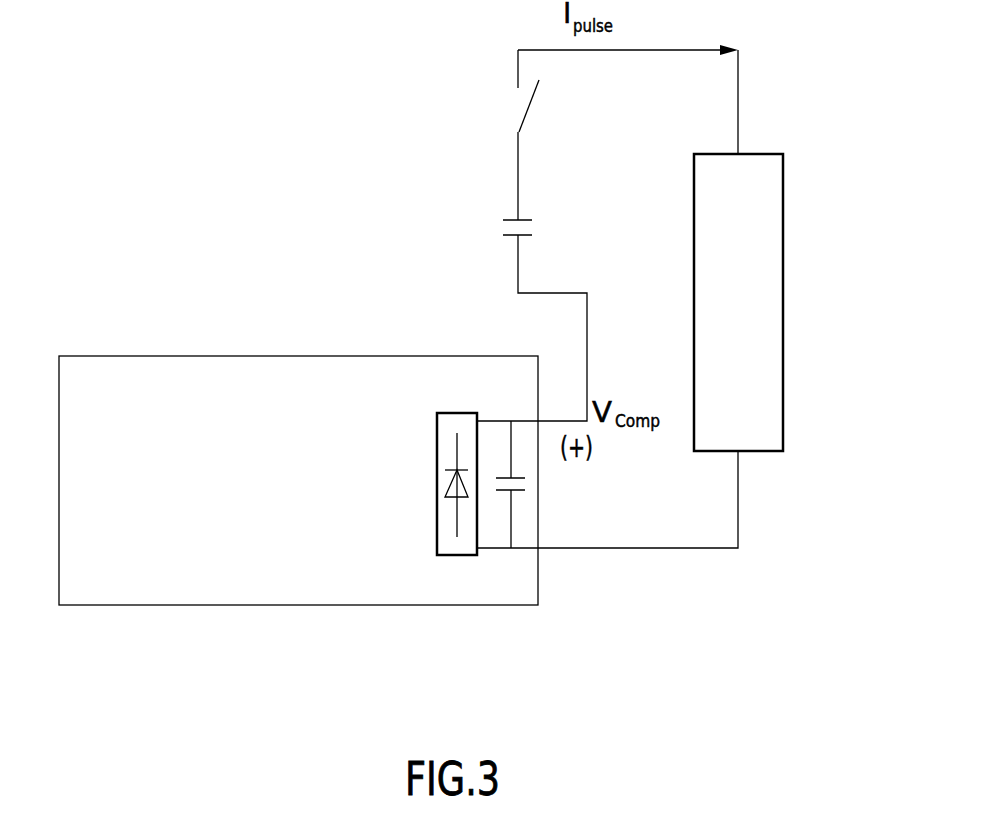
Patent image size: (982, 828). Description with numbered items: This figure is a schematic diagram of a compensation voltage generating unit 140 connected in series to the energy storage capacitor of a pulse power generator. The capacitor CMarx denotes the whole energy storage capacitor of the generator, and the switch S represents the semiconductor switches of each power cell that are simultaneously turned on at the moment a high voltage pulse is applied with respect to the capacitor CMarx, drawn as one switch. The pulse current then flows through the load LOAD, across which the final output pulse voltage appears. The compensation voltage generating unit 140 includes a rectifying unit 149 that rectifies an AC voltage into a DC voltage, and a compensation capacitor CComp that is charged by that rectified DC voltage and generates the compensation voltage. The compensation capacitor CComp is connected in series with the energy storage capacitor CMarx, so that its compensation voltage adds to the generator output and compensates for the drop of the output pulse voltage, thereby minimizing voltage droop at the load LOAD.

The compensation voltage generating unit 140 is at (93, 356).
The rectifying unit 149 is at (457, 555).
The switch S is at (549, 135).
The energy storage capacitor CMarx is at (515, 320).
The compensation capacitor CComp is at (554, 484).
The load LOAD is at (672, 347).